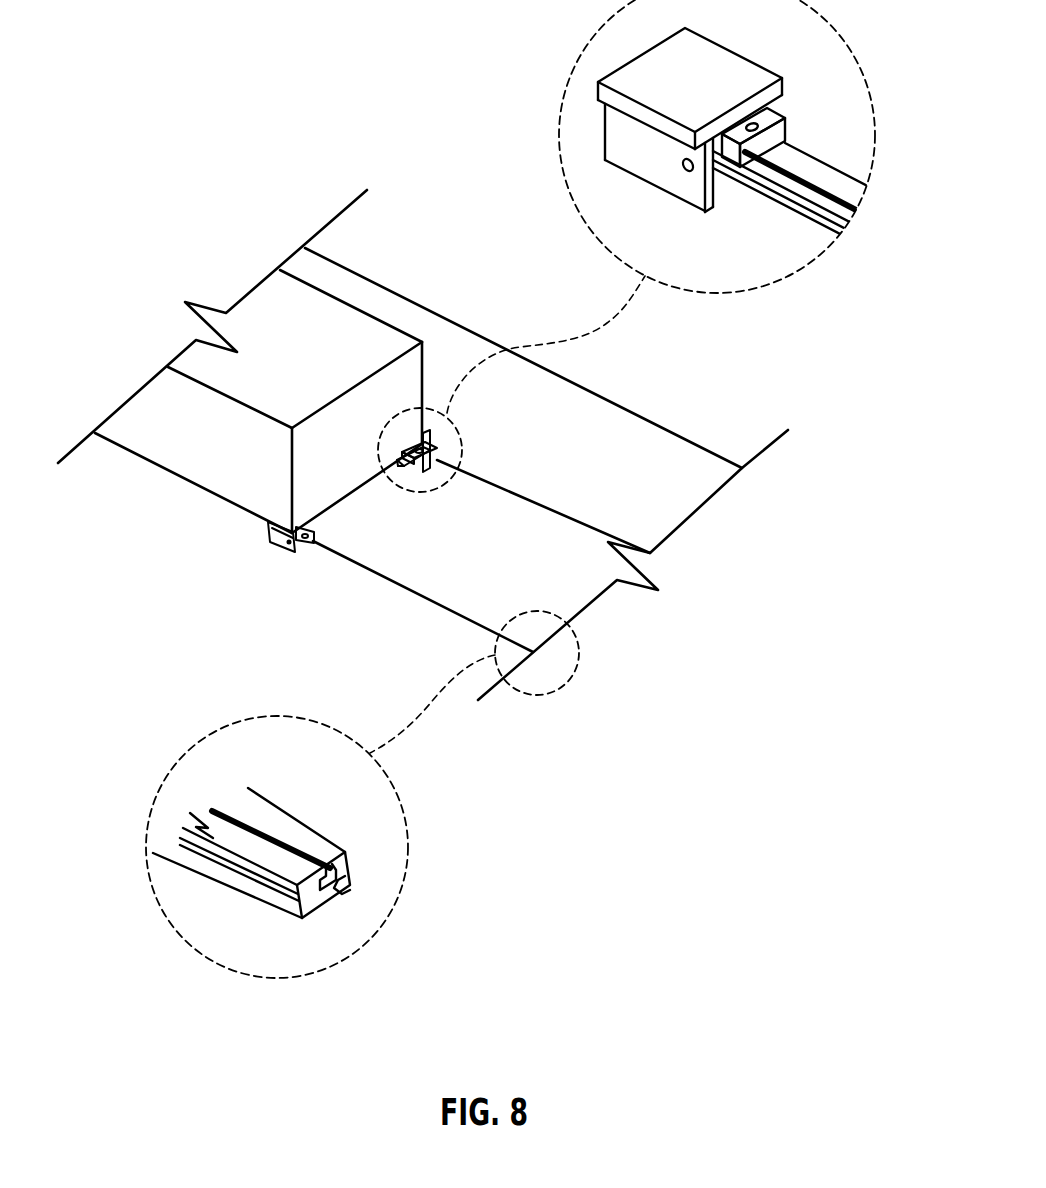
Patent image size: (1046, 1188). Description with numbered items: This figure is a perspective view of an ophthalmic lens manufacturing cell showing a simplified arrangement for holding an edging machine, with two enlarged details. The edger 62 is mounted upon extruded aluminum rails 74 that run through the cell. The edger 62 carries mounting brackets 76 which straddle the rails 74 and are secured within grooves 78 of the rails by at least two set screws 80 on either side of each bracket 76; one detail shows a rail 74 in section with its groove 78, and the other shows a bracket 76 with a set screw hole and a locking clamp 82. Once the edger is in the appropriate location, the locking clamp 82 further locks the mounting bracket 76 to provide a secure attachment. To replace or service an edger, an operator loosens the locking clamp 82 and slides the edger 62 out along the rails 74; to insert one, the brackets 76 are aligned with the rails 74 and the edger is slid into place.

The edger 62 is at (347, 327).
The extruded aluminum rail 74 is at (612, 400).
The mounting bracket 76 is at (440, 438).
The groove 78 is at (270, 838).
The set screw 80 is at (686, 170).
The locking clamp 82 is at (772, 112).